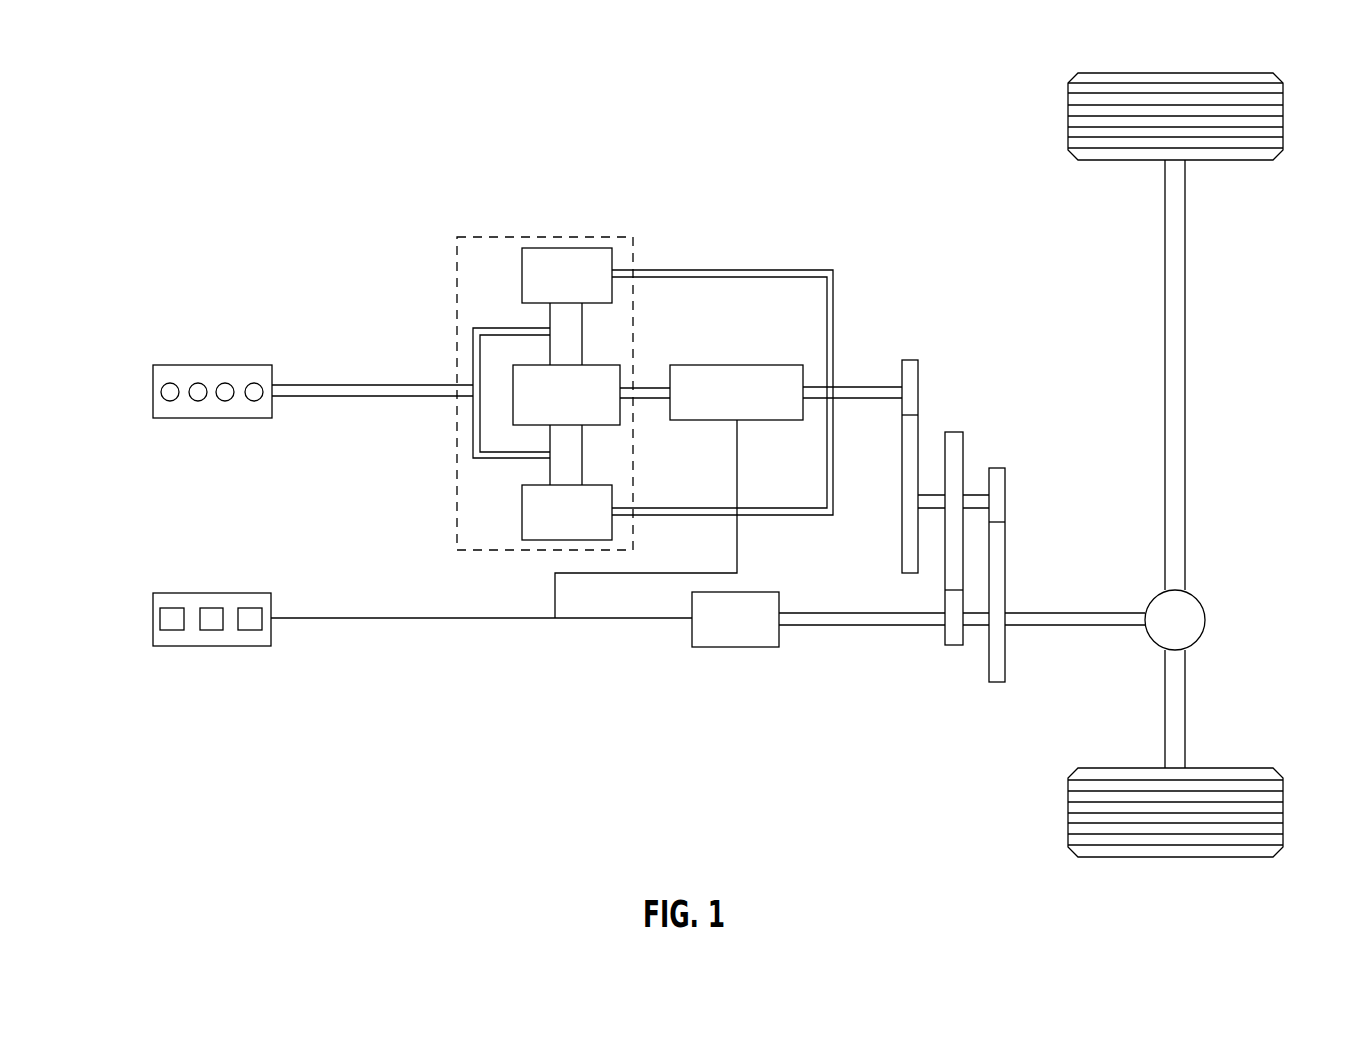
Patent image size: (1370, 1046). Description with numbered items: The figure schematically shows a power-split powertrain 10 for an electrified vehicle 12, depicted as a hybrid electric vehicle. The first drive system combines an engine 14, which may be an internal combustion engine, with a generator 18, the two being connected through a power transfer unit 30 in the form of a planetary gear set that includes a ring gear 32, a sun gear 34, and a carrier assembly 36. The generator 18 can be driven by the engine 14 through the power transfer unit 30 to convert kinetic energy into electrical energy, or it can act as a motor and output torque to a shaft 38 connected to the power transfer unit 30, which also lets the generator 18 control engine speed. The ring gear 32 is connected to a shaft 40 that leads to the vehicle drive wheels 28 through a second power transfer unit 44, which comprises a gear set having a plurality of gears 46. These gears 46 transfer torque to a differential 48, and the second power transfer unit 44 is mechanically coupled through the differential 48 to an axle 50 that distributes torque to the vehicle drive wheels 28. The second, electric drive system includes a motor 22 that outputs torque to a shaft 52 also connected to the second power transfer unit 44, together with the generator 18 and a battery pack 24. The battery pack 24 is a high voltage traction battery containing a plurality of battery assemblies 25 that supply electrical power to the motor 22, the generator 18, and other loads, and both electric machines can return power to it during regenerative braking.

The powertrain 10 is at (264, 141).
The electrified vehicle 12 is at (750, 219).
The engine 14 is at (212, 418).
The generator 18 is at (737, 365).
The motor 22 is at (736, 648).
The battery pack 24 is at (152, 626).
The battery assemblies 25 is at (170, 620).
The vehicle drive wheels 28 is at (1283, 115).
The power transfer unit 30 is at (519, 233).
The ring gear 32 is at (566, 248).
The sun gear 34 is at (620, 420).
The carrier assembly 36 is at (472, 427).
The shaft 38 is at (645, 385).
The shaft 40 is at (878, 401).
The second power transfer unit 44 is at (1025, 318).
The gears 46 is at (910, 360).
The differential 48 is at (1205, 623).
The axle 50 is at (1187, 408).
The shaft 52 is at (881, 627).